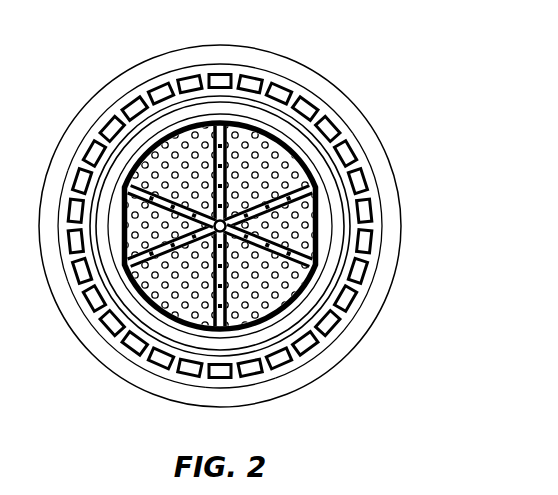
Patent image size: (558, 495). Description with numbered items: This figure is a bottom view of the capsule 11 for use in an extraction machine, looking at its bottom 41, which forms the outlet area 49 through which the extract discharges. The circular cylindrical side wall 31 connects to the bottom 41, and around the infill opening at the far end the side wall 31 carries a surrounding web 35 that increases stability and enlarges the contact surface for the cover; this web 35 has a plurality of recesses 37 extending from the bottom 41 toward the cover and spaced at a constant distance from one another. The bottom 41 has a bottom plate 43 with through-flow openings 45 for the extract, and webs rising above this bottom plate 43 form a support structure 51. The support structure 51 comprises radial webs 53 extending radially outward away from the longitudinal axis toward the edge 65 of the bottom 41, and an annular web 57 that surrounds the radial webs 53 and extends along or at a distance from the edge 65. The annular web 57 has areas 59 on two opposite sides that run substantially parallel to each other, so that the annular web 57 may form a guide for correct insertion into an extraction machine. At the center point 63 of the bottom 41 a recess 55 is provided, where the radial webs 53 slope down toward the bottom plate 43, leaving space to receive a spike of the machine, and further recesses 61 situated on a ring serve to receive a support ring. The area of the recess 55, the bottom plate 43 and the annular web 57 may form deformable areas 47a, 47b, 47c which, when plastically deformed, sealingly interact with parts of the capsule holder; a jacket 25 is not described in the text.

The capsule 11 is at (228, 215).
The outer jacket 25 is at (73, 320).
The side wall 31 is at (346, 132).
The web 35 is at (298, 90).
The recesses 37 is at (315, 355).
The bottom 41 is at (147, 107).
The bottom plate 43 is at (338, 325).
The through-flow openings 45 is at (207, 120).
The deformable area 47a is at (340, 183).
The deformable area 47b is at (335, 197).
The deformable area 47c is at (348, 218).
The outlet area 49 is at (185, 175).
The support structure 51 is at (187, 230).
The radial webs 53 is at (247, 372).
The recess 55 is at (67, 273).
The annular web 57 is at (358, 267).
The areas 59 is at (113, 222).
The recesses 61 is at (130, 330).
The center point 63 is at (238, 205).
The edge 65 is at (367, 150).